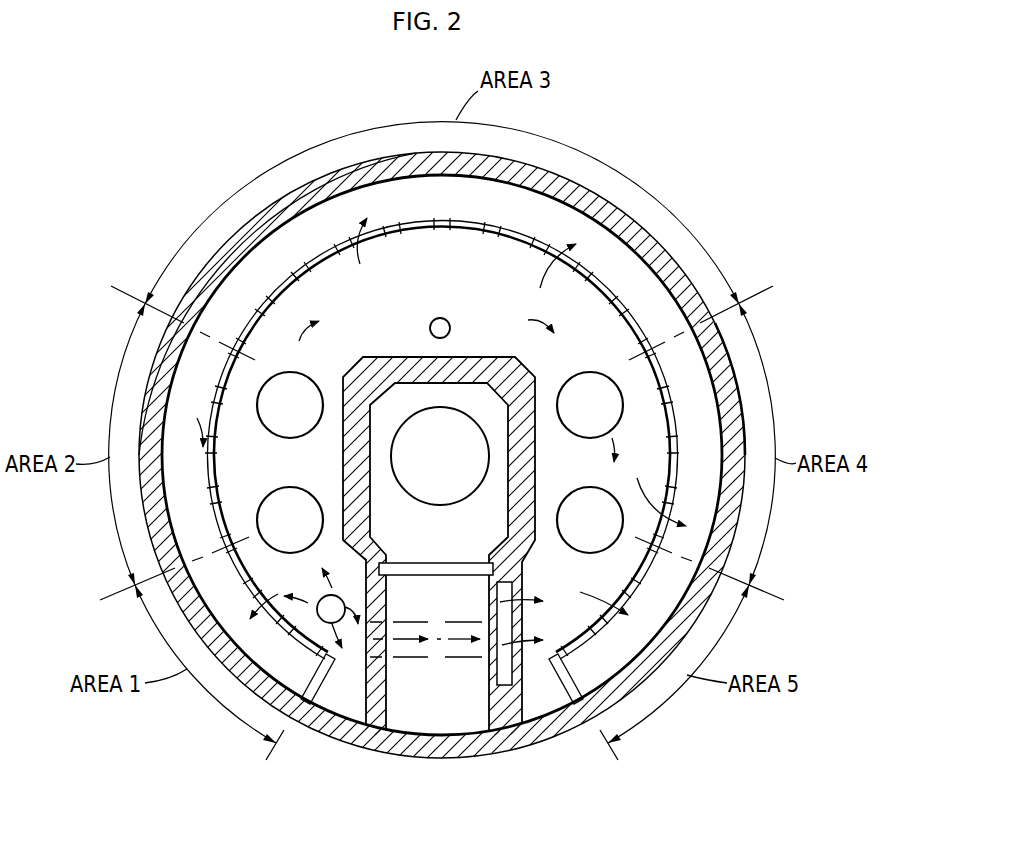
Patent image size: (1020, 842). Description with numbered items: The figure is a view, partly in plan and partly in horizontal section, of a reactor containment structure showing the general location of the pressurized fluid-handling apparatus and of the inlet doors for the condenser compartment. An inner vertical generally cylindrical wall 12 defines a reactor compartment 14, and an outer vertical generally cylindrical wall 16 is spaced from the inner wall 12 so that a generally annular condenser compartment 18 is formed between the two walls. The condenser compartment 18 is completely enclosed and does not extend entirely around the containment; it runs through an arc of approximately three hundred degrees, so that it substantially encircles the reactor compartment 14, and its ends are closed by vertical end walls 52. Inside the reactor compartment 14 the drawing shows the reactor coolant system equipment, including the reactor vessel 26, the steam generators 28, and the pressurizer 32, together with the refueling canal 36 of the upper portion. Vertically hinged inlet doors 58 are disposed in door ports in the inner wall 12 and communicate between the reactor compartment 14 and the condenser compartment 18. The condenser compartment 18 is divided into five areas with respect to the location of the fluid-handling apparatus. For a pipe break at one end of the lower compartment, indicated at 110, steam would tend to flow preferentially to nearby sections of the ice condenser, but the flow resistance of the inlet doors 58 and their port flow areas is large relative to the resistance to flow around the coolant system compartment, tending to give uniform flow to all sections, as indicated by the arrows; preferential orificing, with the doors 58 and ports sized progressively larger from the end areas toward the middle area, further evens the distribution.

The inner vertical generally cylindrical wall 12 is at (300, 272).
The reactor compartment 14 is at (450, 264).
The outer vertical generally cylindrical wall 16 is at (435, 757).
The condenser compartment 18 is at (549, 226).
The reactor vessel 26 is at (422, 490).
The steam generators 28 is at (291, 489).
The pressurizer 32 is at (447, 319).
The refueling canal 36 is at (403, 692).
The vertical end walls 52 is at (319, 666).
The inlet doors 58 is at (602, 285).
The break location 110 is at (320, 605).